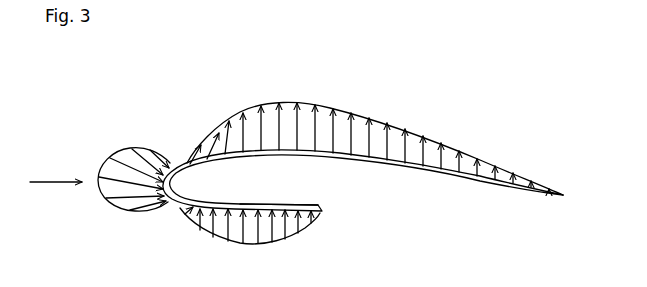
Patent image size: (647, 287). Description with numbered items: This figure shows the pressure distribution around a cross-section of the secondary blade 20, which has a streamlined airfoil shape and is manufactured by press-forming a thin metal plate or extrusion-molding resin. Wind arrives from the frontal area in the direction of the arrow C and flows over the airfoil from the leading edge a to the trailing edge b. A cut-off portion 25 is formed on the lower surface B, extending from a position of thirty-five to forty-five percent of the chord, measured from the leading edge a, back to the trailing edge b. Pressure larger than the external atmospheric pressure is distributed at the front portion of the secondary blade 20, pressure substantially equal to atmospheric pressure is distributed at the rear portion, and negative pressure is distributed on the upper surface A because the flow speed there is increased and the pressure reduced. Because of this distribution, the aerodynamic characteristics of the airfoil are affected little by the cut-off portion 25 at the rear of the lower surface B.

The secondary blade 20 is at (437, 90).
The cut-off portion 25 is at (368, 190).
The upper surface A is at (354, 152).
The lower surface B is at (226, 215).
The leading edge a is at (158, 180).
The trailing edge b is at (565, 195).
The wind direction arrow C is at (56, 172).